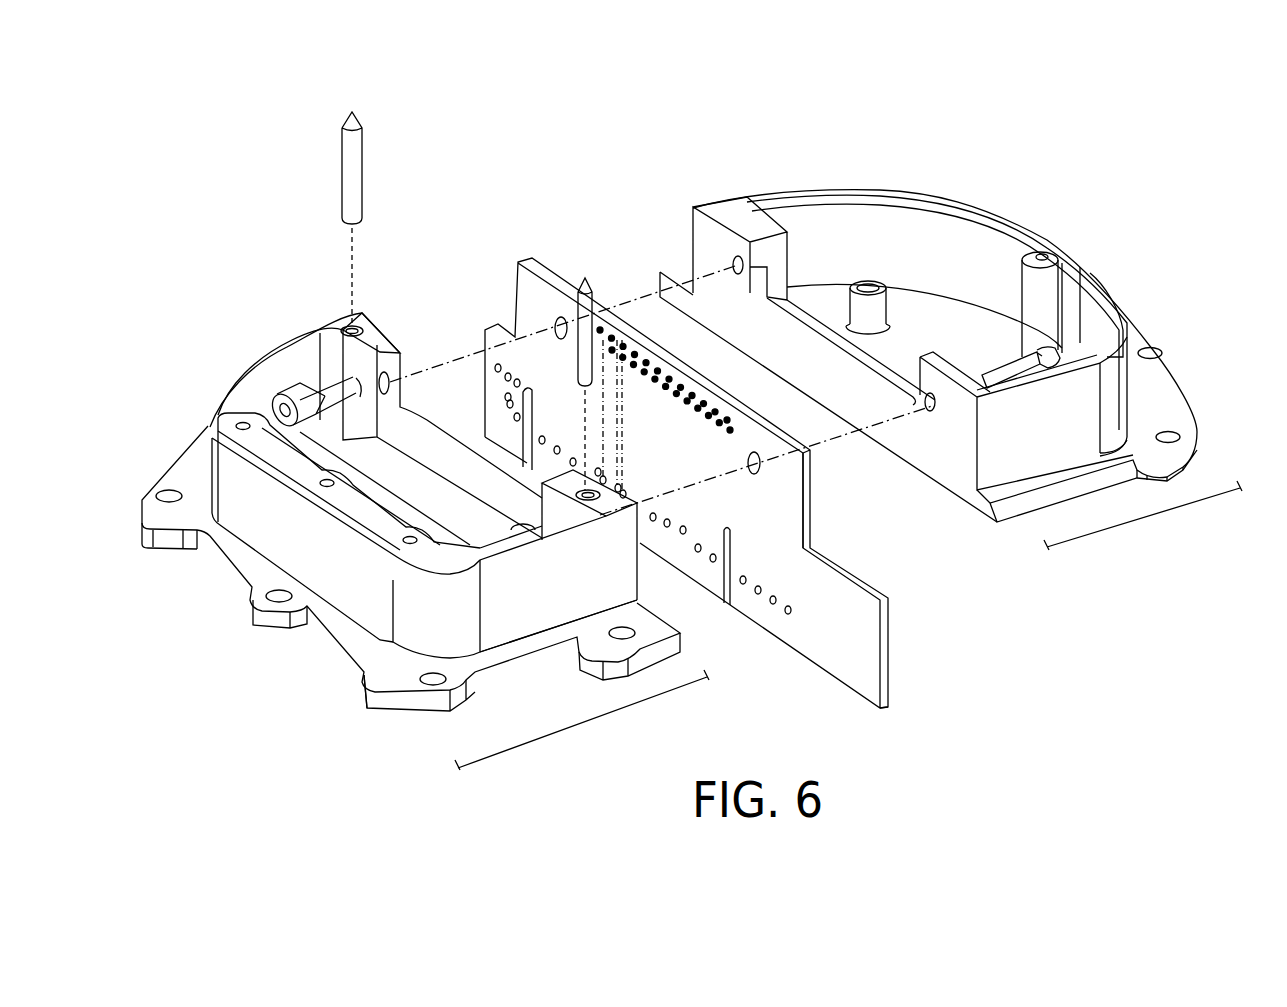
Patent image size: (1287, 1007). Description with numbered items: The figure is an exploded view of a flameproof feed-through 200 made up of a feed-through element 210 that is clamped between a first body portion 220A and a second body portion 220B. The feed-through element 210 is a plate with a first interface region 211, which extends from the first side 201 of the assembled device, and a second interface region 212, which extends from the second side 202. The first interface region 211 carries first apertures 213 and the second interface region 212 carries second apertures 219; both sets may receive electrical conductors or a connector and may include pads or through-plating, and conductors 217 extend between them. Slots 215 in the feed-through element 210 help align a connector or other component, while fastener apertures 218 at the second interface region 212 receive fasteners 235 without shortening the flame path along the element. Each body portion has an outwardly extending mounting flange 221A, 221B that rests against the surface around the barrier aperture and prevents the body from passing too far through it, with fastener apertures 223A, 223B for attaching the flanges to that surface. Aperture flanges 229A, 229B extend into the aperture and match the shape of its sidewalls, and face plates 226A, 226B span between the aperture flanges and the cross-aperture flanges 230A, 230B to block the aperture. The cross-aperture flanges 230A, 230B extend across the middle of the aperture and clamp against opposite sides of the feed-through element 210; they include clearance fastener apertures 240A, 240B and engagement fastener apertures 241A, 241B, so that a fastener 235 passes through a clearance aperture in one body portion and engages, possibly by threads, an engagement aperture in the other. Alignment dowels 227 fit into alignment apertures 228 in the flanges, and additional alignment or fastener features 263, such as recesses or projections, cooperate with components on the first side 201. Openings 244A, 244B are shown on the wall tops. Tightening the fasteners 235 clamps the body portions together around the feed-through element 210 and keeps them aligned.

The flameproof feed-through 200 is at (1003, 688).
The first side 201 is at (168, 552).
The second side 202 is at (143, 503).
The feed-through element 210 is at (895, 640).
The first interface region 211 is at (893, 695).
The second interface region 212 is at (810, 455).
The first apertures 213 is at (683, 528).
The slots 215 is at (727, 605).
The conductors 217 is at (603, 433).
The fastener apertures 218 is at (560, 340).
The second apertures 219 is at (636, 380).
The first body portion 220A is at (600, 730).
The second body portion 220B is at (1166, 515).
The mounting flange 221A is at (364, 688).
The mounting flange 221B is at (1195, 395).
The fastener apertures 223A is at (172, 492).
The fastener apertures 223B is at (1152, 350).
The face plate 226A is at (373, 465).
The face plate 226B is at (940, 319).
The alignment dowel 227 is at (362, 160).
The alignment apertures 228 is at (357, 326).
The aperture flange 229A is at (257, 358).
The aperture flange 229B is at (816, 192).
The cross-aperture flange 230A is at (470, 478).
The cross-aperture flange 230B is at (805, 370).
The fastener 235 is at (288, 395).
The clearance fastener aperture 240A is at (394, 378).
The clearance fastener aperture 240B is at (931, 412).
The engagement fastener aperture 241A is at (553, 524).
The engagement fastener aperture 241B is at (732, 266).
The first wall holes 244A is at (240, 424).
The second wall hole 244B is at (1050, 257).
The features 263 is at (510, 529).